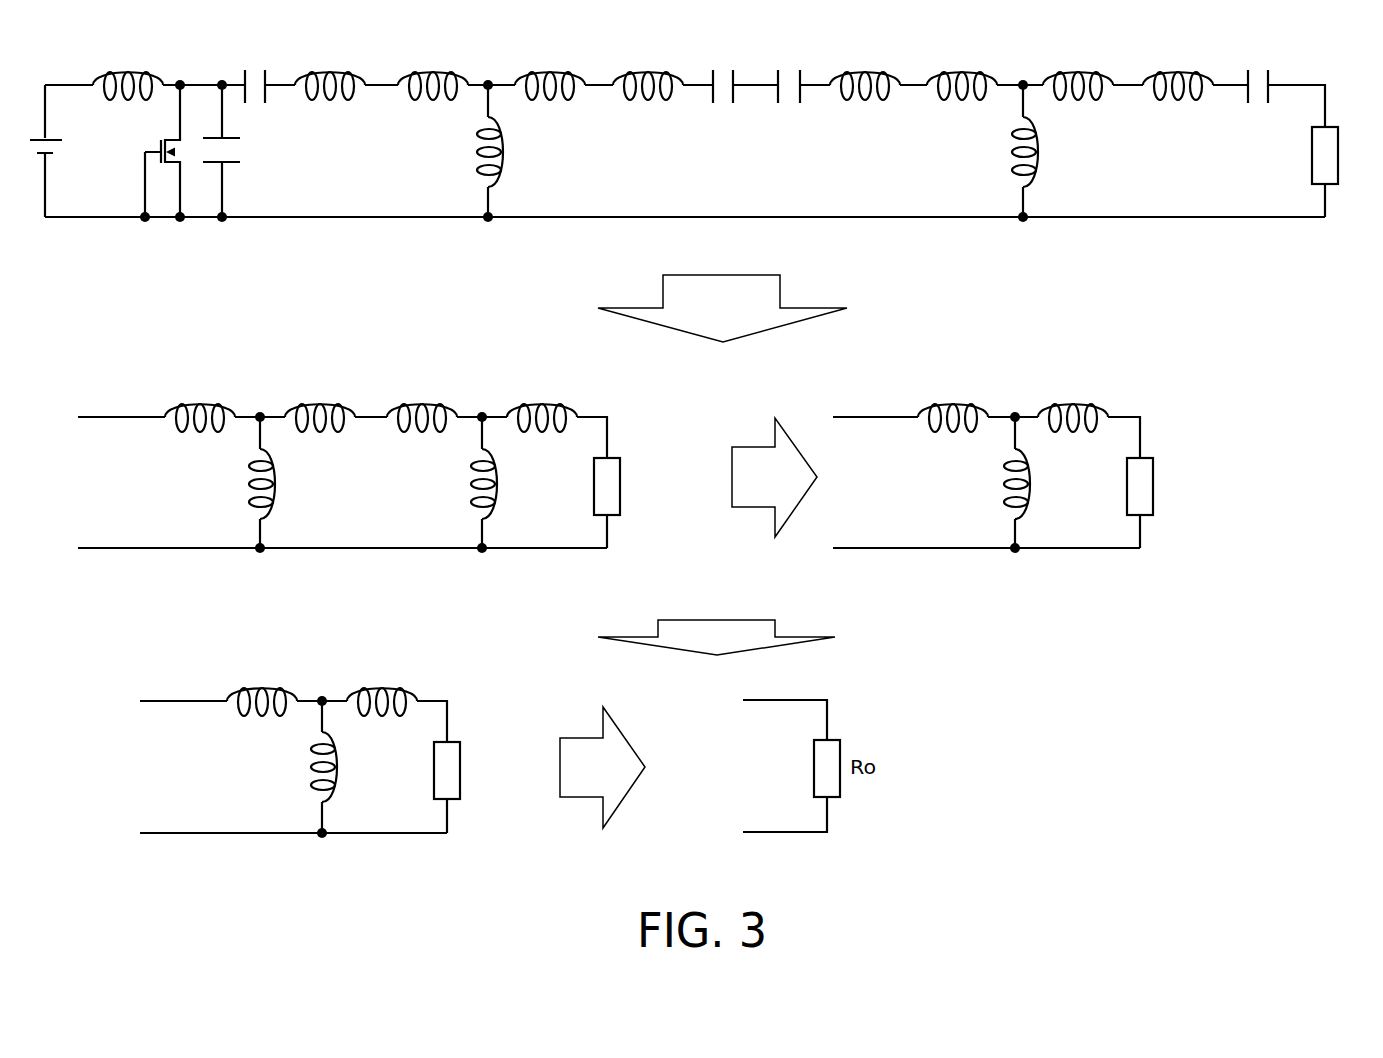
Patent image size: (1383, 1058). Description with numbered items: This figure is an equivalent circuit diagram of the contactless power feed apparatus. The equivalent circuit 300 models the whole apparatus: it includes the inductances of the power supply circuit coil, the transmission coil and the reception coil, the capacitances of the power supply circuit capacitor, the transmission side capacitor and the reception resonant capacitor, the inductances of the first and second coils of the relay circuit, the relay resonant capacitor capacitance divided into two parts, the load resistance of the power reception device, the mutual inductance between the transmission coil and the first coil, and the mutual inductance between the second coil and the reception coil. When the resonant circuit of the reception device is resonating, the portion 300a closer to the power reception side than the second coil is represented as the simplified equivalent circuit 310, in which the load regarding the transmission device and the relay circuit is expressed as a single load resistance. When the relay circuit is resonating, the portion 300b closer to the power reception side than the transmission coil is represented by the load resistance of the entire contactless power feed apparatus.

The equivalent circuit 300 is at (1280, 252).
The portion closer to the power reception side than the second coil 300a is at (367, 572).
The portion closer to the power reception side than the transmission coil 300b is at (172, 850).
The equivalent circuit 310 is at (1126, 615).